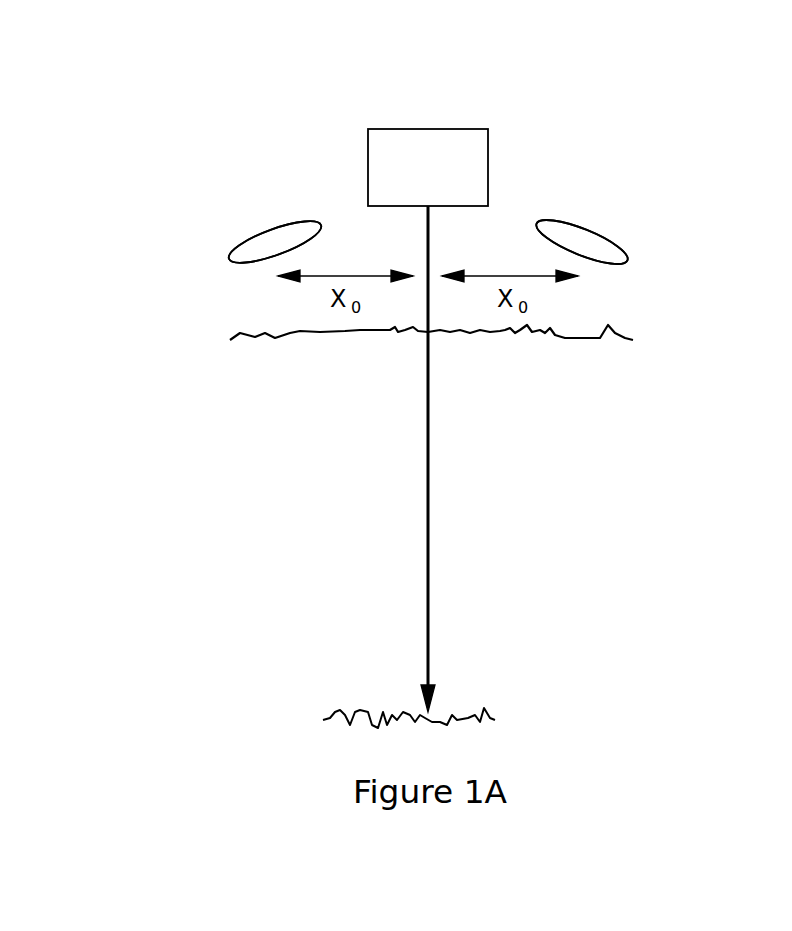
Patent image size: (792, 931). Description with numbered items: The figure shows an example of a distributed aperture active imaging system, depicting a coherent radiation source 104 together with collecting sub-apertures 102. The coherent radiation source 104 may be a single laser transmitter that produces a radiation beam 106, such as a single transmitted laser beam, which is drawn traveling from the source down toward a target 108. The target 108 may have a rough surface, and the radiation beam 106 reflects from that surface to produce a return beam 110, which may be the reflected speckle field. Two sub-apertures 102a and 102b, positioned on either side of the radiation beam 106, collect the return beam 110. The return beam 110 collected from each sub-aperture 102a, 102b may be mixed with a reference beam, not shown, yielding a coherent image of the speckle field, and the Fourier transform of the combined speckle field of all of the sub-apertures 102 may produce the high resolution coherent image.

The collecting sub-apertures 102 is at (577, 208).
The sub-aperture 102a is at (240, 250).
The sub-aperture 102b is at (618, 246).
The coherent radiation source 104 is at (408, 177).
The radiation beam 106 is at (428, 494).
The target 108 is at (510, 719).
The return beam 110 is at (648, 339).